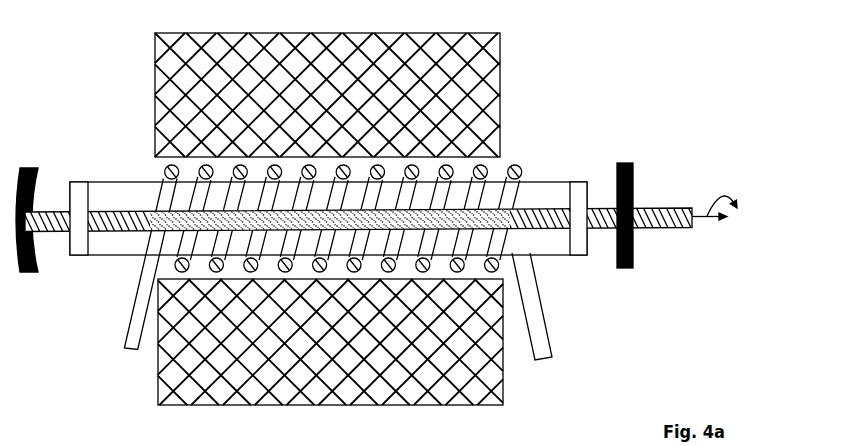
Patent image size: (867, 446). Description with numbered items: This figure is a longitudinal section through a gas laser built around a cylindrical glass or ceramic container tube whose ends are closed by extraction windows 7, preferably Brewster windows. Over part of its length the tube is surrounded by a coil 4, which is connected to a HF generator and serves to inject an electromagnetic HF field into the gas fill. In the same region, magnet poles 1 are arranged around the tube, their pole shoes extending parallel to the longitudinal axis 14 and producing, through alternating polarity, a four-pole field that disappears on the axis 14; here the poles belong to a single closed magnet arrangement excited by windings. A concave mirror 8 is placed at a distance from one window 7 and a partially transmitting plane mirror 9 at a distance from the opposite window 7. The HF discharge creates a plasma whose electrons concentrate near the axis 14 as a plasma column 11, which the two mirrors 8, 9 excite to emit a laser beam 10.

The magnet pole 1 is at (360, 139).
The coil 4 is at (487, 167).
The extraction window 7 is at (84, 207).
The concave mirror 8 is at (553, 182).
The partially transmitting plane mirror 9 is at (624, 270).
The laser beam 10 is at (666, 228).
The plasma column 11 is at (447, 228).
The longitudinal axis 14 is at (724, 211).